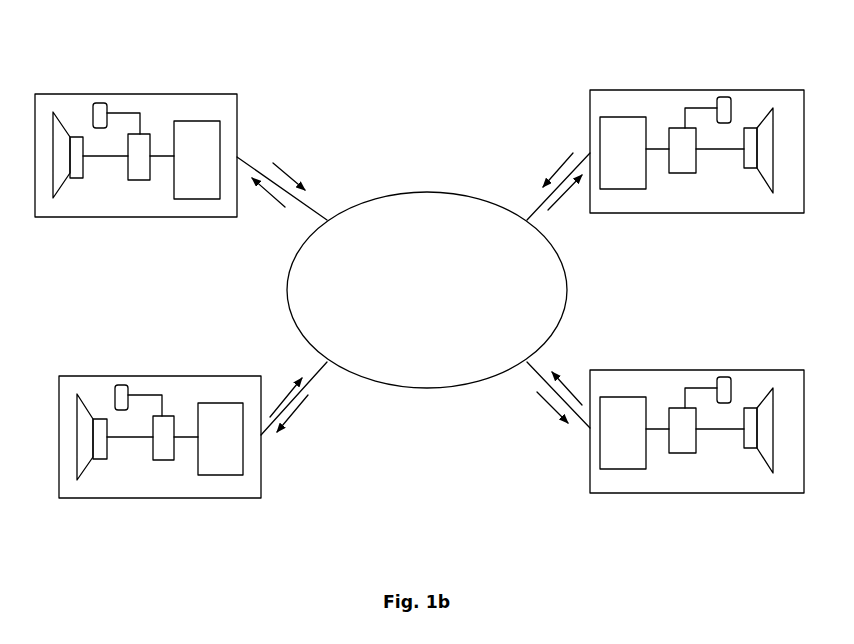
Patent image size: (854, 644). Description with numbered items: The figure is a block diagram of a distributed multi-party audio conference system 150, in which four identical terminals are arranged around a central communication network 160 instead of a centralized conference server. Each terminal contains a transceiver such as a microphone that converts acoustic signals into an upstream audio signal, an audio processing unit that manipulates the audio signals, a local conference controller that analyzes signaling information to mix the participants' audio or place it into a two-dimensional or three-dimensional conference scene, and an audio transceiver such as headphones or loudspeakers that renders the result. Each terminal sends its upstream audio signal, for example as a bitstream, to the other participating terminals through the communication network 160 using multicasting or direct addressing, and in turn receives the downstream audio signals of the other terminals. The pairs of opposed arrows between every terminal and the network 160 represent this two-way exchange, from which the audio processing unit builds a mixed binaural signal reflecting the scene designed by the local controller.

The conference system 150 is at (187, 63).
The communication network 160 is at (388, 192).